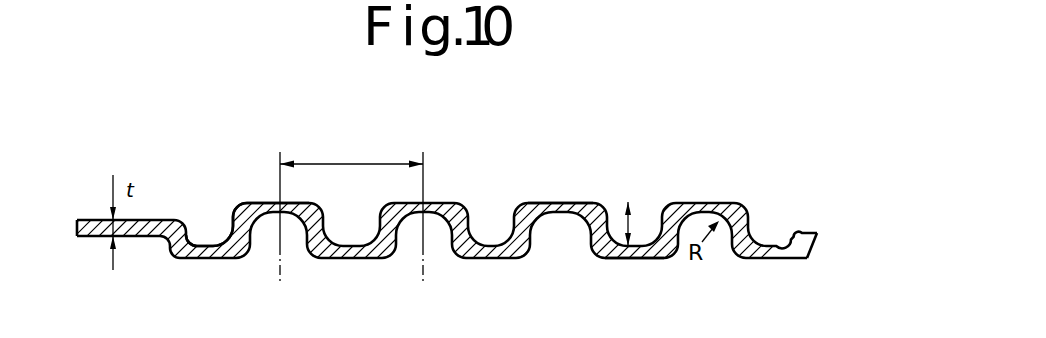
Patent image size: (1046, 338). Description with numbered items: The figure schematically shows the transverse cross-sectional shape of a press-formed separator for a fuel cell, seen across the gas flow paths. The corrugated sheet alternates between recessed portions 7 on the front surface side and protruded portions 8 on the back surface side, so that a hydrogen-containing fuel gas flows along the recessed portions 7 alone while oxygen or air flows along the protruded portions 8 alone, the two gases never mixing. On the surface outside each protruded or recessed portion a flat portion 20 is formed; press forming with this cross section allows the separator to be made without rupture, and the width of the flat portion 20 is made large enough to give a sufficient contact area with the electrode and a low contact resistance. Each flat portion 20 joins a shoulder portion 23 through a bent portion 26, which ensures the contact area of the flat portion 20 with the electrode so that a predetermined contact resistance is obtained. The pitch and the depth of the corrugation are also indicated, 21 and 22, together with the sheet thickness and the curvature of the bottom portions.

The recessed portion 7 is at (486, 222).
The protruded portion 8 is at (560, 232).
The flat portion 20 is at (557, 200).
The corrugation pitch 21 is at (352, 163).
The corrugation depth 22 is at (632, 220).
The shoulder portion 23 is at (242, 206).
The bent portion 26 is at (249, 205).